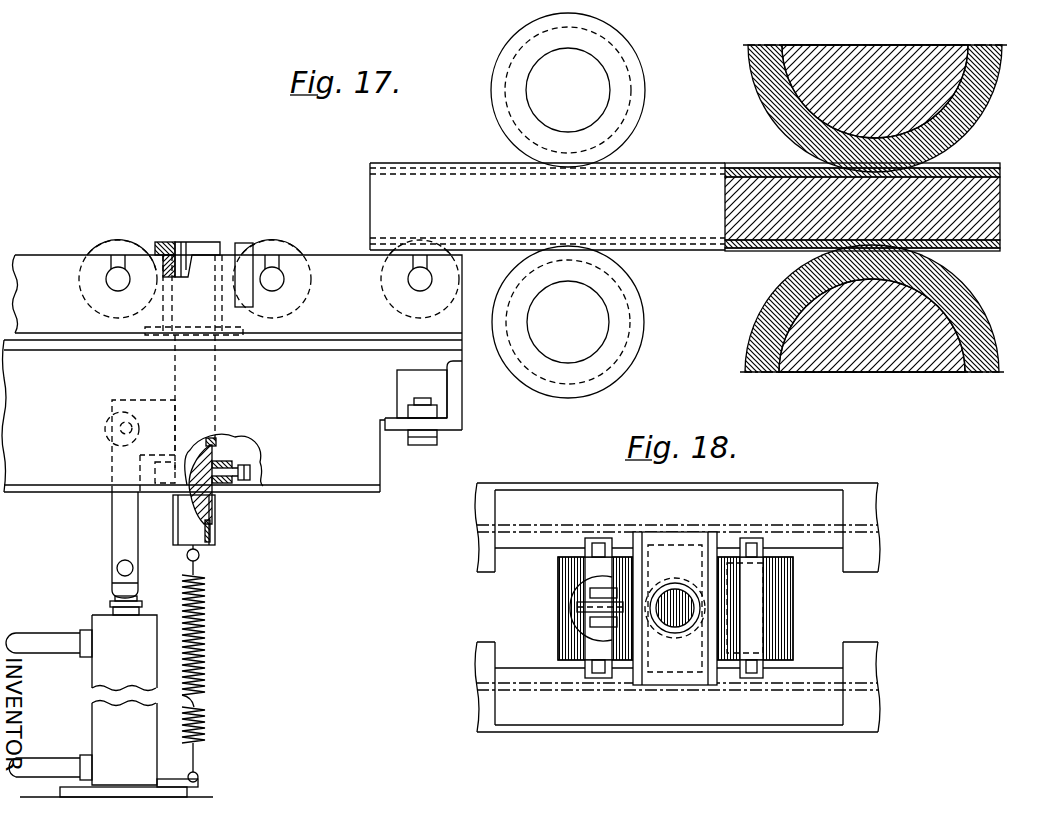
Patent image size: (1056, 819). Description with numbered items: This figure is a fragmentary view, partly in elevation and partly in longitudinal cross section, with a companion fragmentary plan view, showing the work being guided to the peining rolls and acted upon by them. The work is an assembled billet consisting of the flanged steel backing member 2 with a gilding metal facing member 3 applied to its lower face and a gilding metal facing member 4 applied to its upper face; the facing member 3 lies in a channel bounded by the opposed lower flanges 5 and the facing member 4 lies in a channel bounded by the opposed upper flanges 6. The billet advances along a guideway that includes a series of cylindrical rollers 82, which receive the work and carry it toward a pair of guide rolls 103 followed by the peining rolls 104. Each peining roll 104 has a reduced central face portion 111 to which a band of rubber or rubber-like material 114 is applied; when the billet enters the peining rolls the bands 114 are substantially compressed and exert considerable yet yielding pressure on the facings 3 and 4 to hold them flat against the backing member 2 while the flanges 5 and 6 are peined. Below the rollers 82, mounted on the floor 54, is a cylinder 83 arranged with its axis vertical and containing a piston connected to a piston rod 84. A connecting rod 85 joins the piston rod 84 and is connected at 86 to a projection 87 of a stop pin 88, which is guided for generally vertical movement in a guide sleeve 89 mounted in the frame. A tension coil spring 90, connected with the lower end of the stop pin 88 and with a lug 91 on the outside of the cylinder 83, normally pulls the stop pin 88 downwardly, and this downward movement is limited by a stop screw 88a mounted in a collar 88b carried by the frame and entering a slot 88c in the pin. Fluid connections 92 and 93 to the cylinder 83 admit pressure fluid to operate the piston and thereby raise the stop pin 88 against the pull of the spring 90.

In FIG. 17, the cylindrical rollers 82 is at (122, 239).
In FIG. 18, the cylindrical rollers 82 is at (558, 583).
In FIG. 17, the guide sleeve 89 is at (172, 231).
In FIG. 18, the guide sleeve 89 is at (674, 632).
In FIG. 17, the stop pin 88 is at (190, 243).
In FIG. 18, the stop pin 88 is at (662, 598).
In FIG. 17, the stop screw 88a is at (250, 472).
In FIG. 17, the collar 88b is at (222, 466).
In FIG. 17, the slot 88c is at (215, 500).
In FIG. 17, the projection 87 is at (104, 416).
In FIG. 18, the projection 87 is at (572, 610).
In FIG. 17, the connection 86 is at (112, 438).
In FIG. 17, the connecting rod 85 is at (118, 535).
In FIG. 18, the connecting rod 85 is at (590, 618).
In FIG. 17, the piston rod 84 is at (110, 604).
In FIG. 17, the cylinder 83 is at (97, 710).
In FIG. 17, the fluid connection 93 is at (33, 643).
In FIG. 17, the fluid connection 92 is at (35, 767).
In FIG. 17, the tension coil spring 90 is at (205, 702).
In FIG. 17, the lug 91 is at (198, 773).
In FIG. 17, the floor 54 is at (207, 797).
In FIG. 17, the guide rolls 103 is at (642, 72).
In FIG. 17, the peining rolls 104 is at (891, 210).
In FIG. 17, the bands of rubber or rubber-like material 114 is at (996, 82).
In FIG. 17, the reduced central face portion 111 is at (975, 108).
In FIG. 17, the upper flanges 6 is at (977, 168).
In FIG. 17, the gilding metal facing member 4 is at (1002, 173).
In FIG. 17, the flanged steel backing member 2 is at (1002, 205).
In FIG. 17, the gilding metal facing member 3 is at (1002, 244).
In FIG. 17, the lower flanges 5 is at (990, 254).